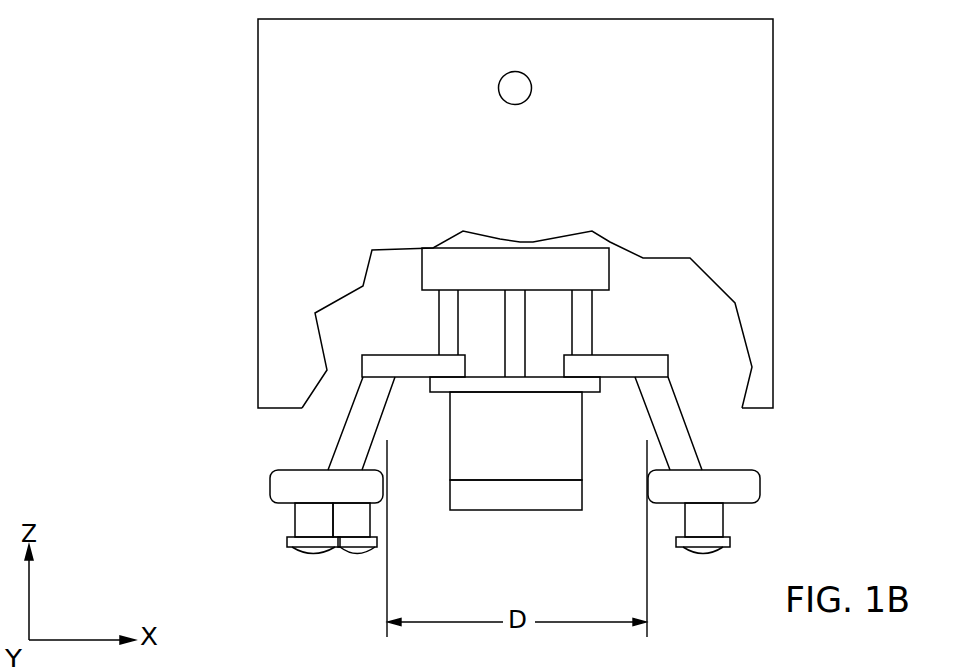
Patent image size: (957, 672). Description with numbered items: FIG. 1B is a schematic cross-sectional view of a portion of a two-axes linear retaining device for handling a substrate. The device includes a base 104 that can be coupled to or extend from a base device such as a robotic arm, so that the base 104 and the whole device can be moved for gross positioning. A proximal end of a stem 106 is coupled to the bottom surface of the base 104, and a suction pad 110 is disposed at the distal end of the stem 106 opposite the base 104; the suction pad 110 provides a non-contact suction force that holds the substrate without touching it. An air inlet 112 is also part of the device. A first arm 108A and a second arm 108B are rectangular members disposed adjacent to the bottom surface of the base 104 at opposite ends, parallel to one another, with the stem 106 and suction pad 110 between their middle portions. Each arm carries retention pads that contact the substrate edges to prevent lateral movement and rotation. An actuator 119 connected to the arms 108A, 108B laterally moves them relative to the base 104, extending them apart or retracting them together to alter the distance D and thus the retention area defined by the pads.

The base 104 is at (537, 215).
The stem 106 is at (539, 455).
The first arm 108A is at (270, 489).
The second arm 108B is at (752, 488).
The suction pad 110 is at (538, 497).
The air inlet 112 is at (520, 85).
The actuator 119 is at (450, 268).